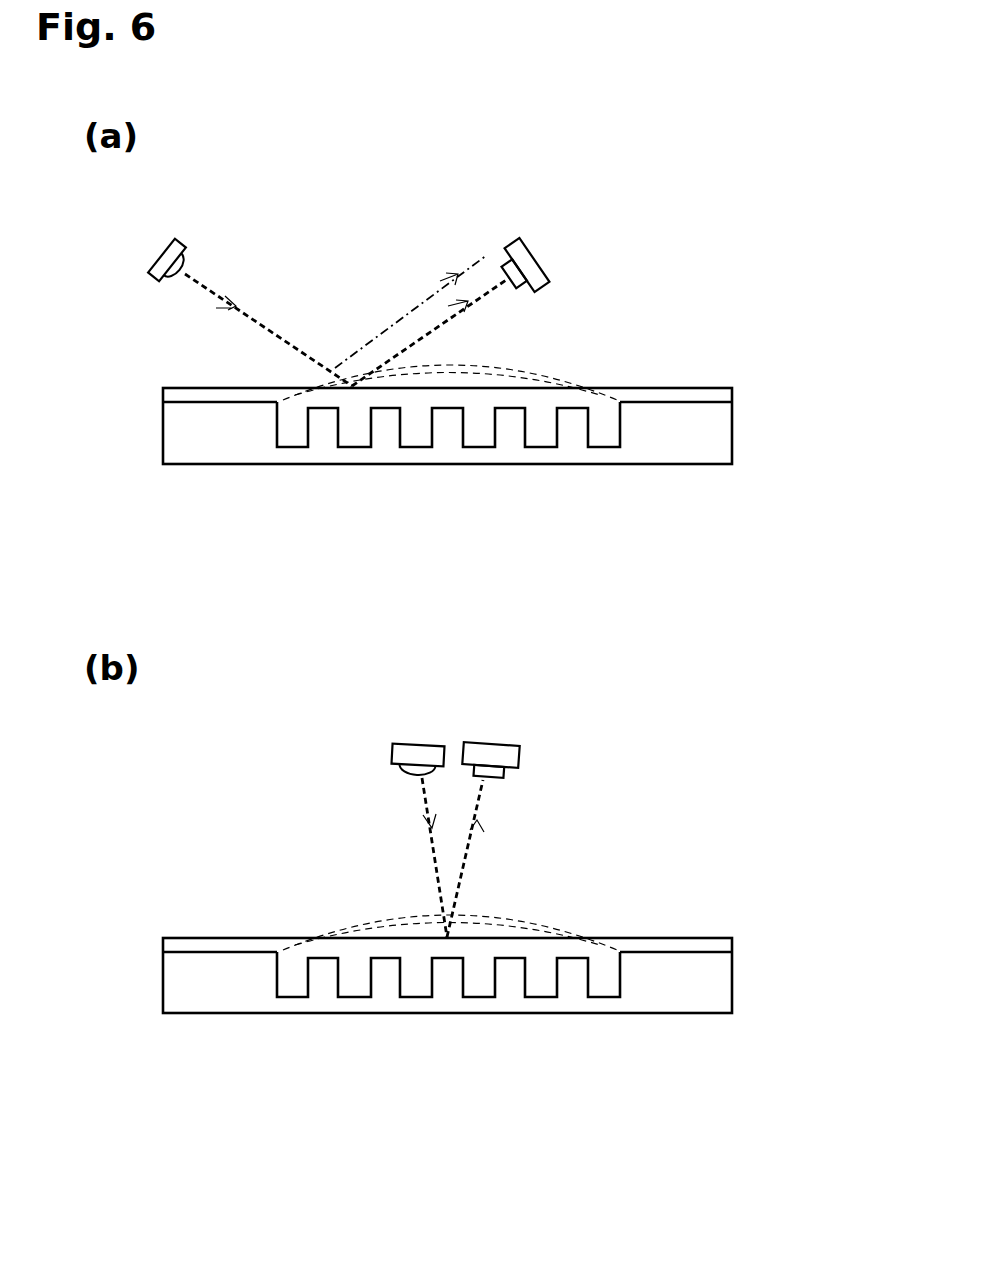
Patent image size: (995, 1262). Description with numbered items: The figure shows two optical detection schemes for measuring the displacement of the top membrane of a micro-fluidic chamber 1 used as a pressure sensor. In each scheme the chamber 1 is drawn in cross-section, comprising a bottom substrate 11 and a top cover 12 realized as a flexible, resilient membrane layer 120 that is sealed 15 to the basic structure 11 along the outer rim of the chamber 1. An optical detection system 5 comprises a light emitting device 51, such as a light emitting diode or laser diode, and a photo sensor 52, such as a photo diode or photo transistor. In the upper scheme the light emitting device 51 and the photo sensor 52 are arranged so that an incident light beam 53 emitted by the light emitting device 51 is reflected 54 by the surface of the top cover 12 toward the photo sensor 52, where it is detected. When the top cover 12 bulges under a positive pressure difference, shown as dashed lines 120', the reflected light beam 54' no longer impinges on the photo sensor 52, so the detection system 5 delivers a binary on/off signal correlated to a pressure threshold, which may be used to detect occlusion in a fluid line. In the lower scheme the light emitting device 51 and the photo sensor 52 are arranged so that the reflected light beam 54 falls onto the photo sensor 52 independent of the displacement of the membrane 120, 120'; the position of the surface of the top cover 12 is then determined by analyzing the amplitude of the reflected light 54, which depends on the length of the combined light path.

The micro-fluidic chamber 1 is at (686, 264).
The optical detection system 5 is at (192, 337).
The bottom substrate 11 is at (665, 440).
The top cover 12 is at (490, 395).
The seal 15 is at (663, 400).
The light emitting device 51 is at (180, 243).
The photo sensor 52 is at (540, 278).
The incident light beam 53 is at (316, 605).
The reflected light beam 54 is at (430, 607).
The reflected light beam under bulged membrane 54' is at (411, 311).
The flexible membrane layer 120 is at (447, 659).
The bulged membrane 120' is at (461, 609).